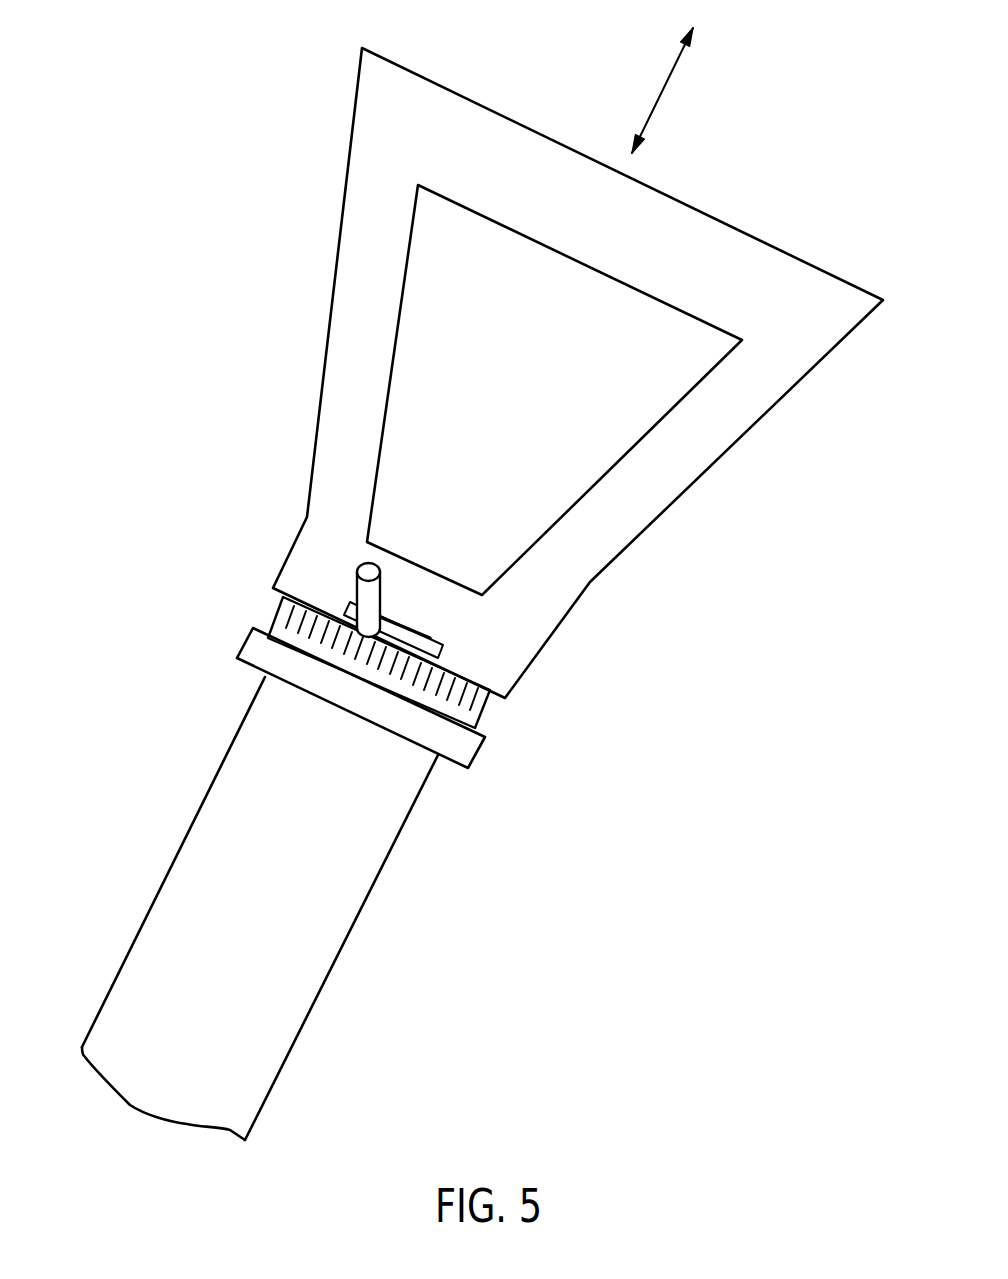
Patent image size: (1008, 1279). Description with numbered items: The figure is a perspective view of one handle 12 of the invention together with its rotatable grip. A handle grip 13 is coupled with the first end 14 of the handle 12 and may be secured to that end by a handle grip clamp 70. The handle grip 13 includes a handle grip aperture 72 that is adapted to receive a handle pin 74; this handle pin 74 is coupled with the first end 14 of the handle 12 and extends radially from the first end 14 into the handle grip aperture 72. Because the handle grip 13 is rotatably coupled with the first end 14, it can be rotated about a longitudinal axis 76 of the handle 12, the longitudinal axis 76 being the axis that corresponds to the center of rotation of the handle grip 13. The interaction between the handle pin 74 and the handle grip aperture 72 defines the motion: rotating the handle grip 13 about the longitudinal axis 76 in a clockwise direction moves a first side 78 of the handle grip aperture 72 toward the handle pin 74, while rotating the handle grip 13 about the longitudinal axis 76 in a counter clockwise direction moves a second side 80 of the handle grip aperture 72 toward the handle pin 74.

The handle 12 is at (113, 1045).
The handle grip 13 is at (707, 427).
The first end 14 is at (340, 880).
The handle grip clamp 70 is at (283, 618).
The handle grip aperture 72 is at (380, 630).
The handle pin 74 is at (373, 600).
The longitudinal axis 76 is at (694, 97).
The first side 78 is at (432, 652).
The second side 80 is at (345, 615).